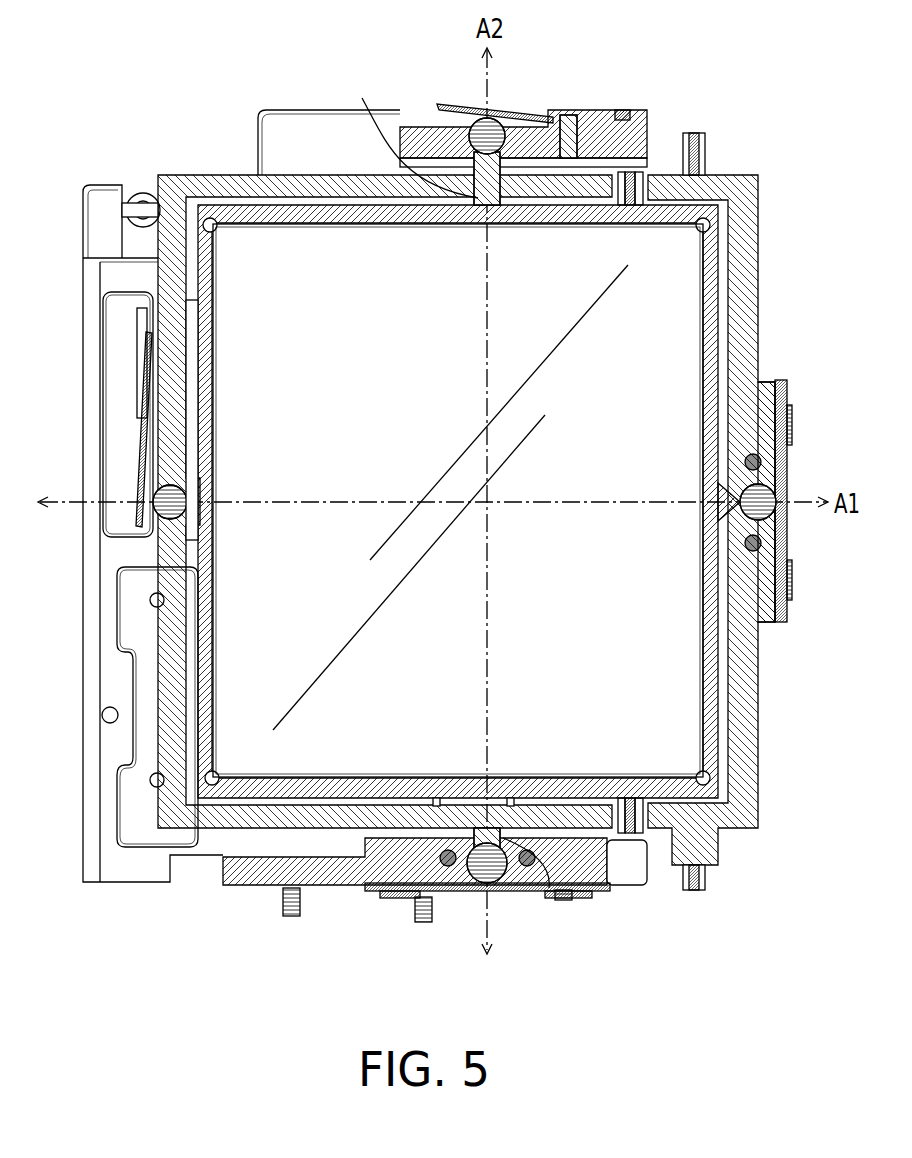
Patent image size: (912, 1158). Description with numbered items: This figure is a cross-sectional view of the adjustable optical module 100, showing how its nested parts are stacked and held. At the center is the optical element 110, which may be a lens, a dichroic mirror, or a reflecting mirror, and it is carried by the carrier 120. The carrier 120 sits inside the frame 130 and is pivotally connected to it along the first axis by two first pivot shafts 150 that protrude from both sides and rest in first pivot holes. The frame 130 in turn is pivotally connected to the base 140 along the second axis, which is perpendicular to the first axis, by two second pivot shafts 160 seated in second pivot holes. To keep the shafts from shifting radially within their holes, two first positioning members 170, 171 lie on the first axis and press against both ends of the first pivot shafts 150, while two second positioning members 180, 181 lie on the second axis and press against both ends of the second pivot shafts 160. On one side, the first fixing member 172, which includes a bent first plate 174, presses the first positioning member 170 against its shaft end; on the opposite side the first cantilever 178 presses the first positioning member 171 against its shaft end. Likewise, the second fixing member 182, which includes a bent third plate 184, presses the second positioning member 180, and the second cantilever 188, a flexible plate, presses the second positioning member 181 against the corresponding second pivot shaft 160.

The adjustable optical module 100 is at (811, 970).
The optical element 110 is at (641, 715).
The carrier 120 is at (712, 650).
The frame 130 is at (748, 712).
The base 140 is at (643, 128).
The first pivot shaft 150 is at (186, 540).
The second pivot shaft 160 is at (553, 925).
The first positioning member 170 is at (762, 490).
The first positioning member 171 is at (165, 497).
The first fixing member 172 is at (781, 501).
The first plate 174 is at (785, 395).
The first cantilever 178 is at (140, 516).
The second positioning member 180 is at (480, 881).
The second positioning member 181 is at (492, 131).
The second fixing member 182 is at (487, 890).
The third plate 184 is at (368, 891).
The second cantilever 188 is at (530, 109).